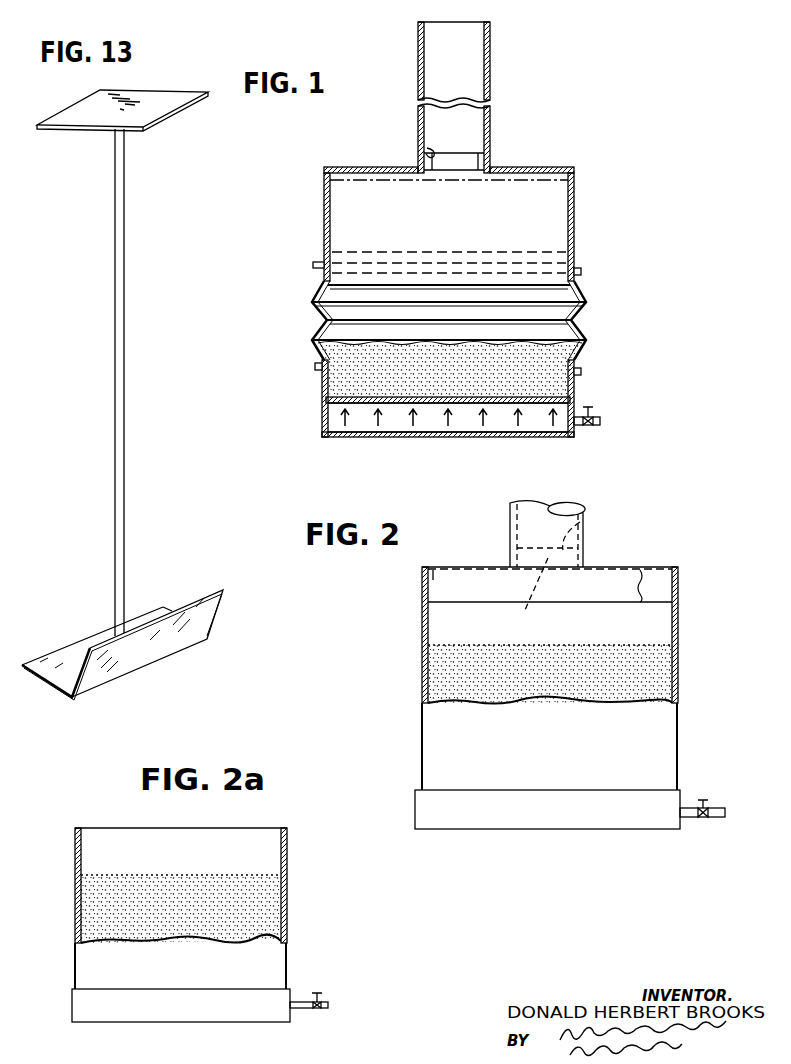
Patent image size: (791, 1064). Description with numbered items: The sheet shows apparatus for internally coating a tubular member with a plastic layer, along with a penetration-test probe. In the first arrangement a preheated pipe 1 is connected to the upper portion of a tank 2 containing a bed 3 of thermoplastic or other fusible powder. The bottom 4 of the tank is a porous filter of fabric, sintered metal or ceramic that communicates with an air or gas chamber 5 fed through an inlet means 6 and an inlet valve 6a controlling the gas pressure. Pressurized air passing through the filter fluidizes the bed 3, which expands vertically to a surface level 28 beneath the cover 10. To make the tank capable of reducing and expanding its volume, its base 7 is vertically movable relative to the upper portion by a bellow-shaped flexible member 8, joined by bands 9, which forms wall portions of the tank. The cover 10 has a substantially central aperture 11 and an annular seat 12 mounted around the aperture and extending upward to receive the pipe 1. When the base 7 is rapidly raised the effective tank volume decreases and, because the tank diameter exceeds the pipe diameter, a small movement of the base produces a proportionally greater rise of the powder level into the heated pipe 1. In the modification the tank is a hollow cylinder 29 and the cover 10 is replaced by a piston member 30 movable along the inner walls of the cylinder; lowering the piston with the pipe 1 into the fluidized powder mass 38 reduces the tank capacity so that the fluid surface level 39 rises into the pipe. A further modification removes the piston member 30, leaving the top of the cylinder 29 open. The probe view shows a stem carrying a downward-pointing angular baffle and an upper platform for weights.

In FIG. 1, the pipe 1 is at (490, 46).
In FIG. 2, the pipe 1 is at (530, 513).
In FIG. 1, the tank 2 is at (324, 208).
In FIG. 1, the bed of thermoplastic particles or powder 3 is at (540, 362).
In FIG. 1, the bottom porous filter 4 is at (462, 401).
In FIG. 1, the air or gas chamber 5 is at (435, 424).
In FIG. 2, the air or gas chamber 5 is at (547, 829).
In FIG. 2A, the air or gas chamber 5 is at (183, 1013).
In FIG. 1, the inlet means 6 is at (594, 414).
In FIG. 2, the inlet means 6 is at (702, 808).
In FIG. 2A, the inlet means 6 is at (327, 1001).
In FIG. 1, the inlet valve 6a is at (591, 428).
In FIG. 2A, the inlet valve 6a is at (316, 1010).
In FIG. 1, the base of the tank 7 is at (322, 383).
In FIG. 1, the flexible member 8 is at (313, 312).
In FIG. 1, the bands 9 is at (581, 271).
In FIG. 1, the cover 10 is at (363, 167).
In FIG. 1, the central aperture 11 is at (458, 165).
In FIG. 2, the central aperture 11 is at (526, 592).
In FIG. 1, the annular seat 12 is at (427, 148).
In FIG. 2, the annular seat 12 is at (584, 525).
In FIG. 1, the surface level of fluidized powder bed 28 is at (520, 180).
In FIG. 2, the hollow cylinder 29 is at (650, 741).
In FIG. 2A, the hollow cylinder 29 is at (102, 960).
In FIG. 2, the piston member 30 is at (643, 570).
In FIG. 2, the fluidized powder mass 38 is at (460, 657).
In FIG. 2A, the fluidized powder mass 38 is at (107, 910).
In FIG. 2, the fluid surface level 39 is at (630, 647).
In FIG. 2A, the fluid surface level 39 is at (242, 875).